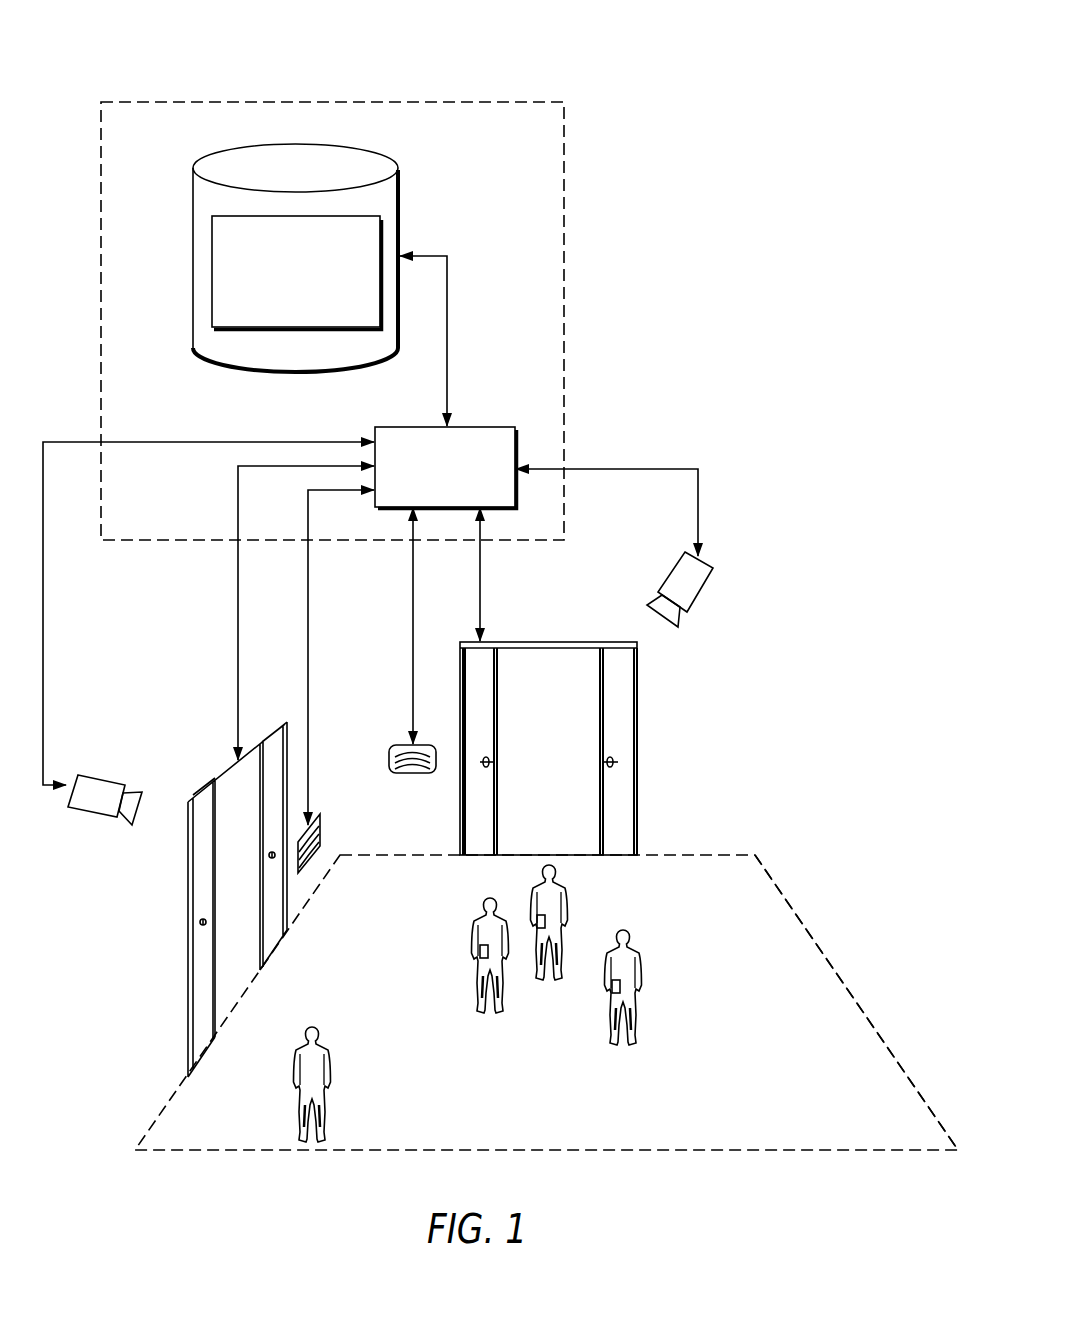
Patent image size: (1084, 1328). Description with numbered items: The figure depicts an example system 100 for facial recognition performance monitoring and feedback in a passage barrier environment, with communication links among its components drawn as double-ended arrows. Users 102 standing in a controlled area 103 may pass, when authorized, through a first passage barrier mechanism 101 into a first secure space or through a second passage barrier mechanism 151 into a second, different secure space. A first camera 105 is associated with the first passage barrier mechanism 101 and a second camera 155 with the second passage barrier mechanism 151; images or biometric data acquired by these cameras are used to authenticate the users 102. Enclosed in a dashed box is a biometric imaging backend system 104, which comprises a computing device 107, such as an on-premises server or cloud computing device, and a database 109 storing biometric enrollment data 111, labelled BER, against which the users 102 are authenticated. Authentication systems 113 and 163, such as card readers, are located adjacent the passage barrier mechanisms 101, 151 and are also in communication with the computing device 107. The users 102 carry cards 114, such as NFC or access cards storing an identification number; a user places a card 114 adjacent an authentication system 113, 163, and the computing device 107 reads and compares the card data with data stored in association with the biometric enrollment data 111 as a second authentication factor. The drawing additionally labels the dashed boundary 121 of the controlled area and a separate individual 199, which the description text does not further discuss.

The system 100 is at (103, 32).
The first passage barrier mechanism 101 is at (637, 740).
The users 102 is at (666, 940).
The controlled area 103 is at (802, 874).
The biometric imaging backend system 104 is at (565, 319).
The first camera 105 is at (707, 563).
The computing device 107 is at (478, 427).
The database 109 is at (193, 215).
The biometric enrollment data 111 is at (212, 272).
The authentication system 113 is at (408, 746).
The cards 114 is at (478, 950).
The boundary 121 is at (852, 995).
The second passage barrier mechanism 151 is at (226, 771).
The second camera 155 is at (93, 816).
The authentication system 163 is at (322, 823).
The person 199 is at (296, 1068).